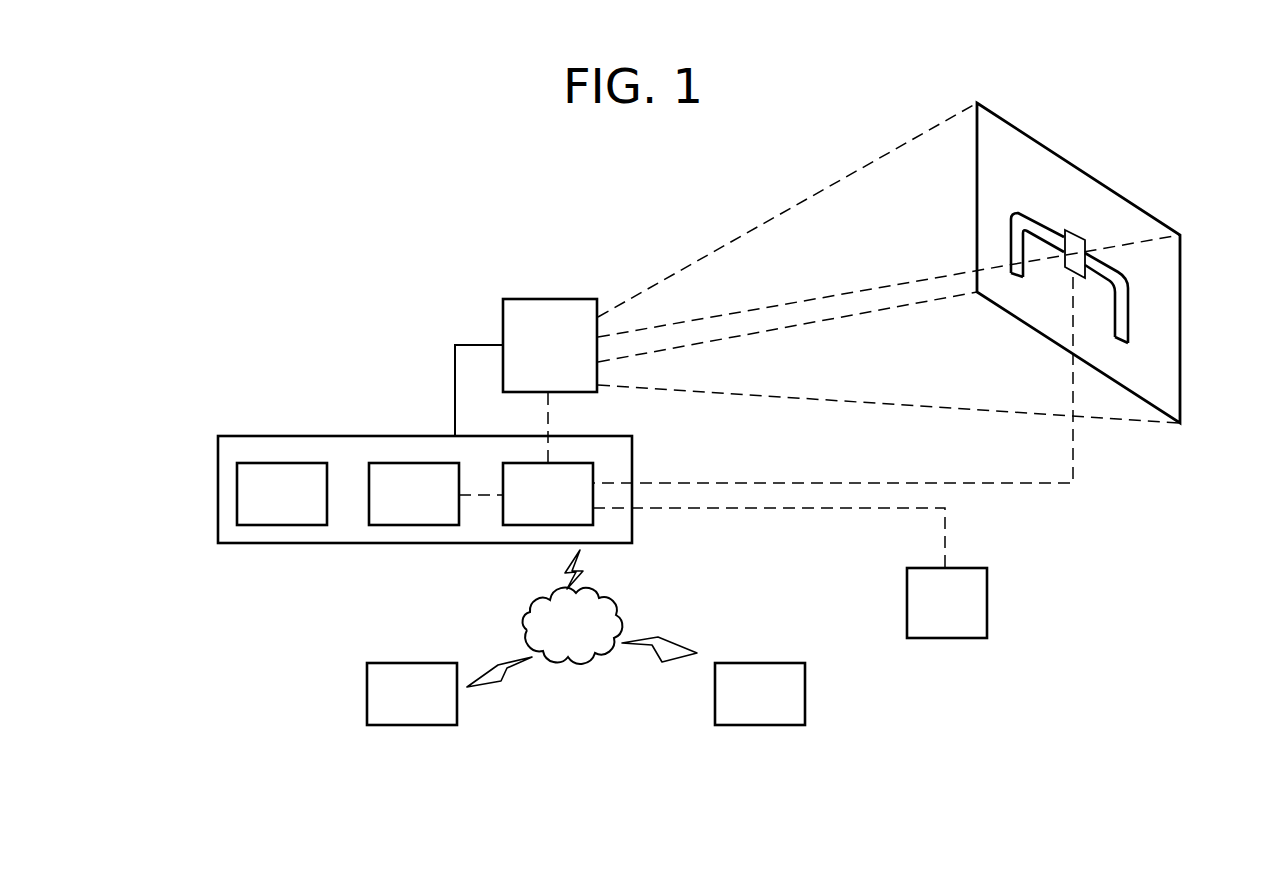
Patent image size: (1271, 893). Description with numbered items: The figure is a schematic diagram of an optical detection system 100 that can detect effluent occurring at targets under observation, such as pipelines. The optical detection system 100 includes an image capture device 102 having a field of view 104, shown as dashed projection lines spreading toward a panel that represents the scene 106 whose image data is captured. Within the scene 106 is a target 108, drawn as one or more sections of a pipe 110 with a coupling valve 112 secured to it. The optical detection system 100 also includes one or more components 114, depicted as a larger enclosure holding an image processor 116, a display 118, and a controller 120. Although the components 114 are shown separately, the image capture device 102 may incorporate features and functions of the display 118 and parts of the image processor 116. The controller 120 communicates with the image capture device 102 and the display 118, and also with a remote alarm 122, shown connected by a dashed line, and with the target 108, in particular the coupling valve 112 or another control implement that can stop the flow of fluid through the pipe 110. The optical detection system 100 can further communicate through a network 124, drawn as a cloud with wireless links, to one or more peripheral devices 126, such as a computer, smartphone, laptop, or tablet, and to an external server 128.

The optical detection system 100 is at (463, 219).
The image capture device 102 is at (529, 361).
The field of view 104 is at (1157, 218).
The scene 106 is at (1043, 187).
The target 108 is at (1128, 372).
The pipe 110 is at (1128, 323).
The coupling valve 112 is at (1080, 240).
The components 114 is at (300, 430).
The image processor 116 is at (261, 505).
The display 118 is at (393, 505).
The controller 120 is at (527, 505).
The remote alarm 122 is at (928, 620).
The network 124 is at (550, 640).
The peripheral devices 126 is at (737, 709).
The external server 128 is at (429, 709).